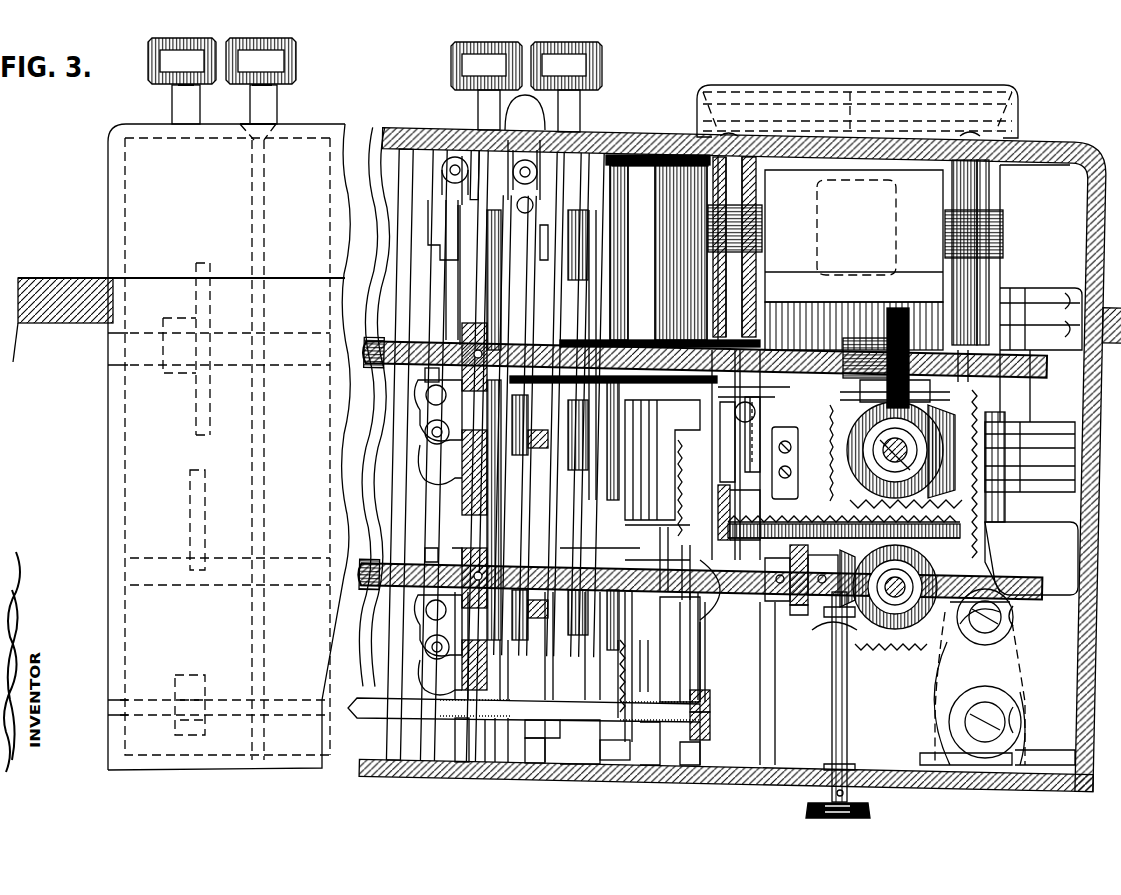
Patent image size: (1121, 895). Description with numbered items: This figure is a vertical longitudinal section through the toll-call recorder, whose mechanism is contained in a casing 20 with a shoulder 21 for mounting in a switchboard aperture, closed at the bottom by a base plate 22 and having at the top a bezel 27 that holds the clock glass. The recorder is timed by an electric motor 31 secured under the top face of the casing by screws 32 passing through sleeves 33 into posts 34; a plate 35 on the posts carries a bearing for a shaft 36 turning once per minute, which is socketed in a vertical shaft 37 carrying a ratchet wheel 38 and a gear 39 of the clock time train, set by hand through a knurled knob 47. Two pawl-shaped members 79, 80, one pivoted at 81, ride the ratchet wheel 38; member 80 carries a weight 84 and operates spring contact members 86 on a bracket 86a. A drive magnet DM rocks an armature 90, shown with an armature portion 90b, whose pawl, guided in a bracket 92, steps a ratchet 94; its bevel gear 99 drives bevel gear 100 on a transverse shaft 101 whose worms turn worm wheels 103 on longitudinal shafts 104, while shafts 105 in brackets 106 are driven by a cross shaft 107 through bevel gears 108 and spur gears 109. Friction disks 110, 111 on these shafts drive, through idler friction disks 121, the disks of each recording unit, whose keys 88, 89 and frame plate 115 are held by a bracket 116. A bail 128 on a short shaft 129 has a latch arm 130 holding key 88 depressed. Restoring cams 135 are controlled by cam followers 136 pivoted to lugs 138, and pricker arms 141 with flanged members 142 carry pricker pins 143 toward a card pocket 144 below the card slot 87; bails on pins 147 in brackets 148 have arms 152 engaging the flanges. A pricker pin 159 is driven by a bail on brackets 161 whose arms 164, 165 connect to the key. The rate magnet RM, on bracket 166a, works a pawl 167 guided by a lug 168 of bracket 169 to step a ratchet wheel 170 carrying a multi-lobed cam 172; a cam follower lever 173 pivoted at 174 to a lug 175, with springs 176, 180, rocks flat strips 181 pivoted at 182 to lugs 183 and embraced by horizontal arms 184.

The casing 20 is at (108, 212).
The shoulder 21 is at (289, 286).
The base plate 22 is at (404, 778).
The bezel 27 is at (1014, 120).
The electric motor 31 is at (828, 296).
The screws 32 is at (735, 178).
The sleeves 33 is at (752, 192).
The posts 34 is at (755, 265).
The plate 35 is at (799, 387).
The shaft 36 is at (840, 405).
The vertical shaft 37 is at (830, 706).
The ratchet wheel 38 is at (705, 548).
The gear 39 is at (833, 588).
The knurled knob 47 is at (869, 804).
The member 79 is at (718, 496).
The member 80 is at (760, 520).
The pivot 81 is at (720, 515).
The weight 84 is at (720, 422).
The spring contact members 86 is at (758, 414).
The bracket 86a is at (792, 462).
The card slot 87 is at (284, 134).
The key 88 is at (240, 72).
The key 89 is at (602, 70).
The armature 90 is at (1000, 570).
The bracket portion 90b is at (1040, 512).
The bracket 92 is at (1028, 290).
The ratchet 94 is at (1020, 450).
The bevel gear 99 is at (945, 440).
The bevel gear 100 is at (911, 488).
The transverse shaft 101 is at (870, 460).
The worm wheels 103 is at (902, 298).
The longitudinal shafts 104 is at (822, 344).
The shafts 105 is at (412, 560).
The brackets 106 is at (785, 622).
The cross shaft 107 is at (870, 670).
The bevel gears 108 is at (842, 640).
The spur gears 109 is at (832, 425).
The friction disks 110 is at (220, 272).
The friction disks 111 is at (207, 490).
The frame plate 115 is at (462, 762).
The bracket 116 is at (436, 136).
The idler friction disks 121 is at (478, 196).
The bail 128 is at (430, 232).
The short shaft 129 is at (418, 178).
The latch arm 130 is at (445, 288).
The restoring cams 135 is at (590, 290).
The cam followers 136 is at (525, 346).
The lugs 138 is at (600, 340).
The pricker arms 141 is at (592, 265).
The flanged members 142 is at (432, 376).
The pricker pins 143 is at (545, 470).
The card pocket 144 is at (600, 552).
The pins 147 is at (420, 435).
The brackets 148 is at (425, 455).
The arm 152 is at (425, 396).
The pricker pin 159 is at (545, 225).
The brackets 161 is at (528, 142).
The arm 164 is at (525, 148).
The arm 165 is at (482, 144).
The bracket 166a is at (657, 541).
The pawl 167 is at (723, 590).
The lug 168 is at (719, 646).
The bracket 169 is at (700, 688).
The ratchet wheel 170 is at (700, 672).
The multi-lobed cam 172 is at (703, 649).
The cam follower lever 173 is at (650, 764).
The pivot 174 is at (622, 764).
The lug 175 is at (689, 780).
The spring 176 is at (675, 498).
The spring 180 is at (620, 750).
The flat strips 181 is at (380, 712).
The pivot 182 is at (178, 704).
The lugs 183 is at (197, 732).
The horizontal arm 184 is at (510, 735).
The rate magnet RM is at (640, 178).
The drive magnet DM is at (928, 678).